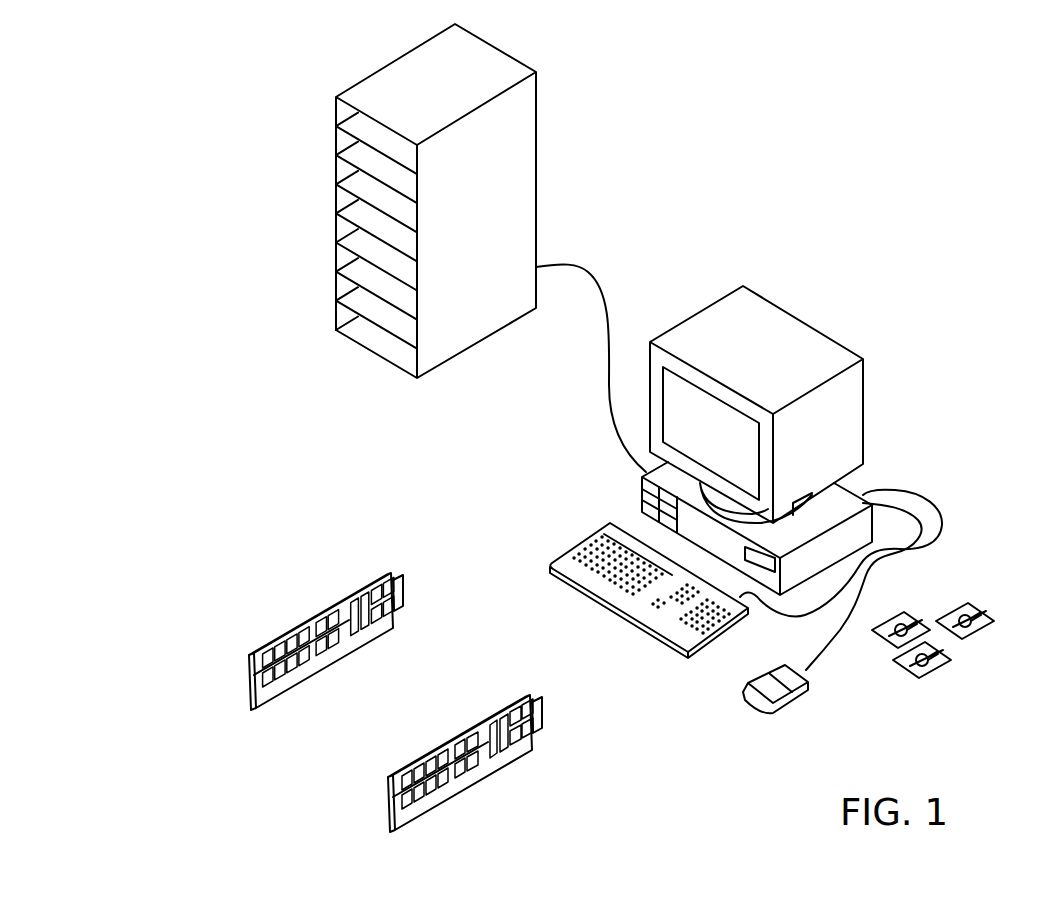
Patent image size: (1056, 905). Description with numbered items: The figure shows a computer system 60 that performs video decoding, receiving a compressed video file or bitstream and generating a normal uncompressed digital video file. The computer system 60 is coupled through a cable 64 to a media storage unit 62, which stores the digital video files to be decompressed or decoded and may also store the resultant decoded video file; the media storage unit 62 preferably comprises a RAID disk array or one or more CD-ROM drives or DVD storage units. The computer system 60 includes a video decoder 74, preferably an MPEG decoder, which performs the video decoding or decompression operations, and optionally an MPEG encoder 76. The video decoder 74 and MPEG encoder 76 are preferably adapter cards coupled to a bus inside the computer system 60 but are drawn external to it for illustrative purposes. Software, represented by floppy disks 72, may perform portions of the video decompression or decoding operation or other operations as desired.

The computer system 60 is at (775, 328).
The media storage unit 62 is at (355, 84).
The cable 64 is at (577, 265).
The floppy disks 72 is at (967, 605).
The video decoder 74 is at (293, 628).
The MPEG encoder 76 is at (433, 750).